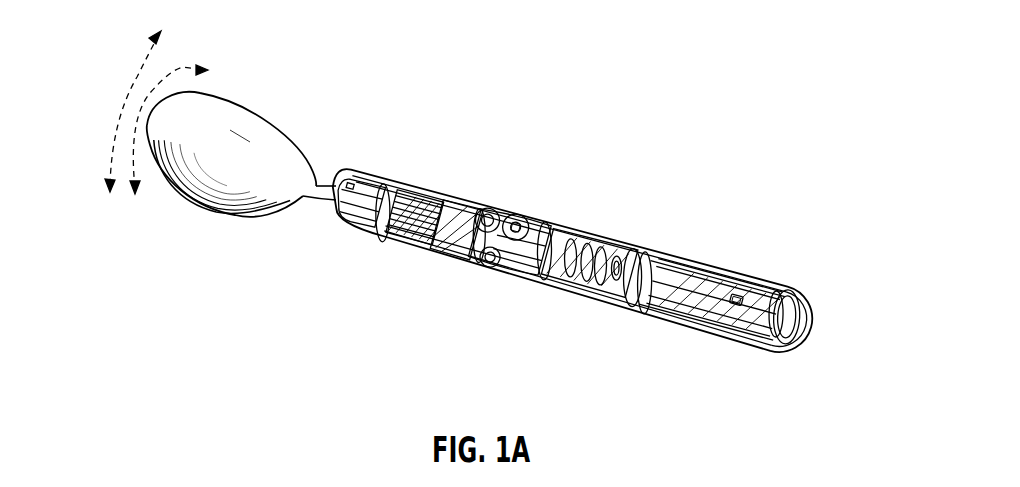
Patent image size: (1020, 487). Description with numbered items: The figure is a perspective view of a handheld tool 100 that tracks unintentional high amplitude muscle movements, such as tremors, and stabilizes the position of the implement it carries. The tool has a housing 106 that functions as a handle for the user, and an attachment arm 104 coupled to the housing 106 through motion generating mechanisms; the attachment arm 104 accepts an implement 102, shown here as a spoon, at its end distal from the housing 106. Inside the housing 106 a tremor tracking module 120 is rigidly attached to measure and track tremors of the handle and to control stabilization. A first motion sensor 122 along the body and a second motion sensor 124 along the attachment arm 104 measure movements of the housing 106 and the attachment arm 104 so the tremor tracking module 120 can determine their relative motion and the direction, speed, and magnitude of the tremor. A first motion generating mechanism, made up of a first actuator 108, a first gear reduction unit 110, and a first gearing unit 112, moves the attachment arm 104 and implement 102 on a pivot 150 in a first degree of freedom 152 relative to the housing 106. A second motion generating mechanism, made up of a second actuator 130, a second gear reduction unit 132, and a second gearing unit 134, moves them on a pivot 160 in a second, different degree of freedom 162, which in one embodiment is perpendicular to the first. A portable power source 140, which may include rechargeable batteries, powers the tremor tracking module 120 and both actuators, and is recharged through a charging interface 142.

The handheld tool 100 is at (688, 91).
The implement 102 is at (253, 100).
The attachment arm 104 is at (412, 183).
The housing 106 is at (650, 247).
The first actuator 108 is at (597, 298).
The first gear reduction unit 110 is at (560, 236).
The first gearing unit 112 is at (535, 266).
The tremor tracking module 120 is at (696, 278).
The first motion sensor 122 is at (742, 297).
The second motion sensor 124 is at (365, 230).
The second actuator 130 is at (417, 240).
The second gear reduction unit 132 is at (455, 262).
The second gearing unit 134 is at (492, 212).
The portable power source 140 is at (747, 341).
The charging interface 142 is at (785, 308).
The pivot 150 is at (515, 222).
The first degree of freedom 152 is at (173, 67).
The pivot 160 is at (488, 268).
The second degree of freedom 162 is at (137, 65).